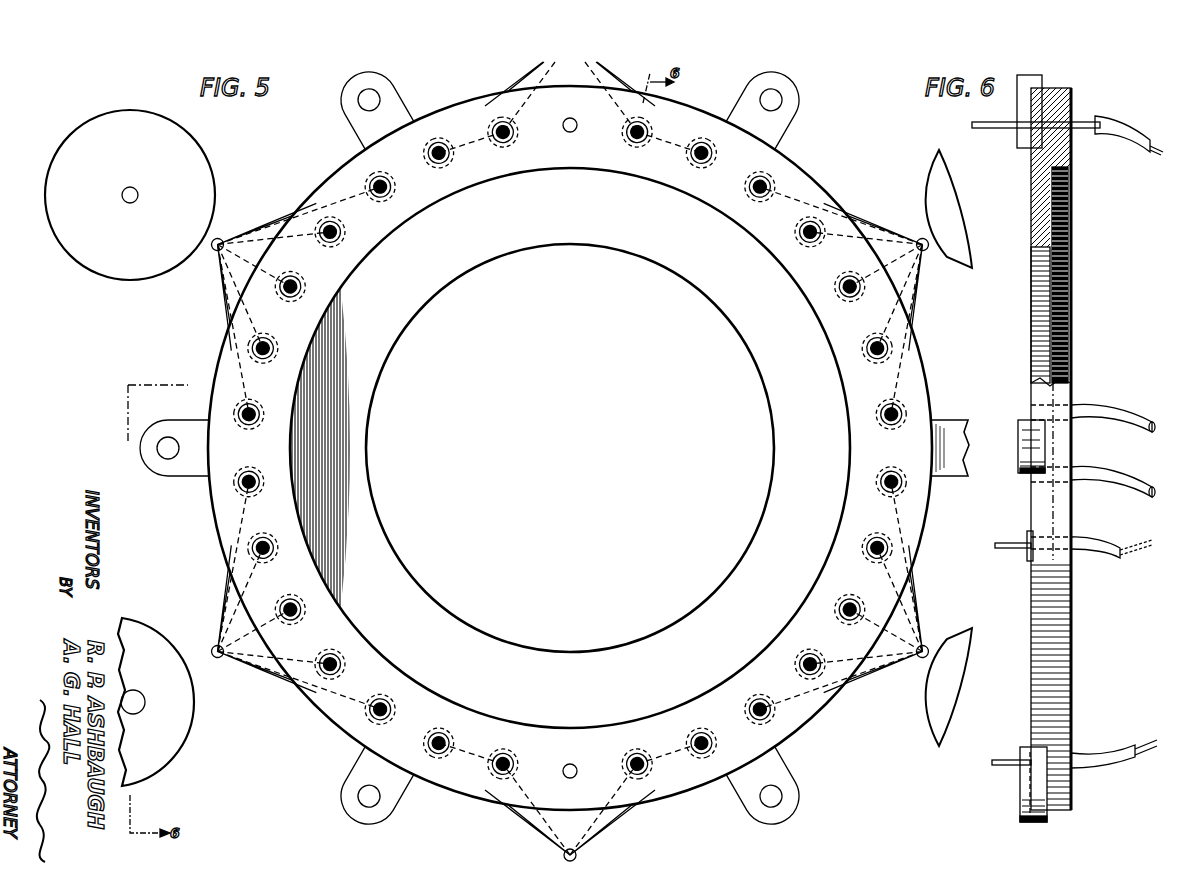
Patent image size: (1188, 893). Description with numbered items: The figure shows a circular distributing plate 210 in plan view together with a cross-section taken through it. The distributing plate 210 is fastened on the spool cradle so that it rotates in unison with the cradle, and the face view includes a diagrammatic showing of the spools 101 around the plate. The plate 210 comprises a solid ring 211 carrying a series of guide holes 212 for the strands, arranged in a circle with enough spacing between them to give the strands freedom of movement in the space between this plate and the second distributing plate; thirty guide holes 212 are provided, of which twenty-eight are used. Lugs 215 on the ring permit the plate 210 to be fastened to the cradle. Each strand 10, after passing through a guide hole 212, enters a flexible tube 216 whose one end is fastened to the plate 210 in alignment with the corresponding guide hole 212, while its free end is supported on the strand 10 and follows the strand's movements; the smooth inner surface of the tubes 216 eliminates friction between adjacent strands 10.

In FIG. 5, the strand 10 is at (540, 78).
In FIG. 6, the strand 10 is at (986, 128).
In FIG. 5, the spool 101 is at (206, 140).
In FIG. 5, the distributing plate 210 is at (688, 106).
In FIG. 6, the distributing plate 210 is at (1076, 97).
In FIG. 5, the solid ring 211 is at (546, 166).
In FIG. 6, the solid ring 211 is at (1062, 152).
In FIG. 5, the guide hole 212 is at (433, 164).
In FIG. 6, the guide hole 212 is at (1032, 152).
In FIG. 5, the lug 215 is at (388, 105).
In FIG. 6, the lug 215 is at (1018, 96).
In FIG. 5, the flexible tube 216 is at (806, 234).
In FIG. 6, the flexible tube 216 is at (1126, 130).